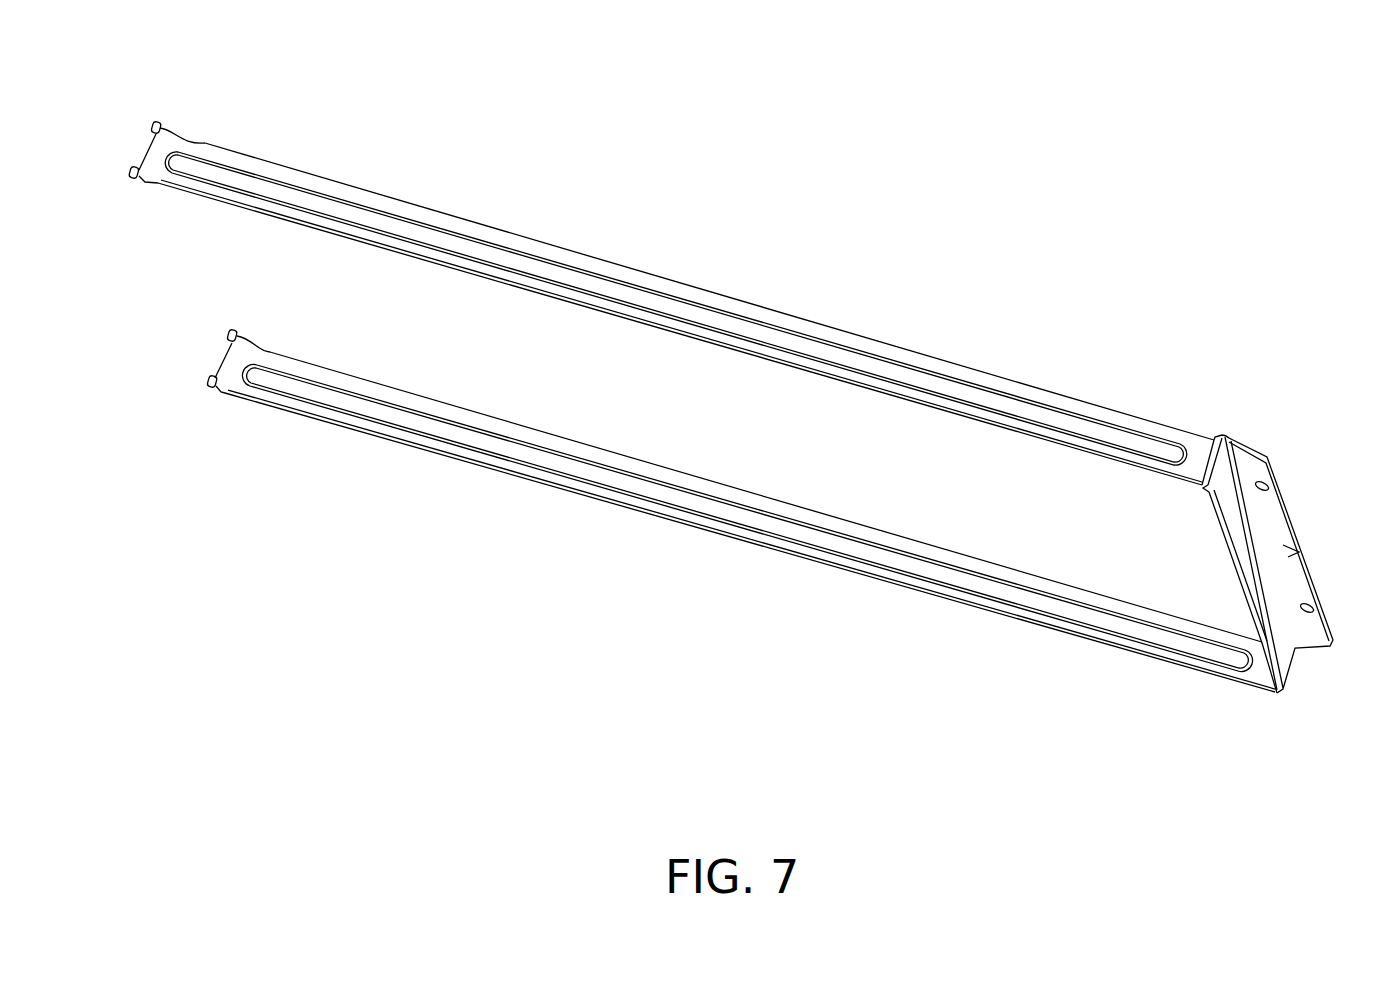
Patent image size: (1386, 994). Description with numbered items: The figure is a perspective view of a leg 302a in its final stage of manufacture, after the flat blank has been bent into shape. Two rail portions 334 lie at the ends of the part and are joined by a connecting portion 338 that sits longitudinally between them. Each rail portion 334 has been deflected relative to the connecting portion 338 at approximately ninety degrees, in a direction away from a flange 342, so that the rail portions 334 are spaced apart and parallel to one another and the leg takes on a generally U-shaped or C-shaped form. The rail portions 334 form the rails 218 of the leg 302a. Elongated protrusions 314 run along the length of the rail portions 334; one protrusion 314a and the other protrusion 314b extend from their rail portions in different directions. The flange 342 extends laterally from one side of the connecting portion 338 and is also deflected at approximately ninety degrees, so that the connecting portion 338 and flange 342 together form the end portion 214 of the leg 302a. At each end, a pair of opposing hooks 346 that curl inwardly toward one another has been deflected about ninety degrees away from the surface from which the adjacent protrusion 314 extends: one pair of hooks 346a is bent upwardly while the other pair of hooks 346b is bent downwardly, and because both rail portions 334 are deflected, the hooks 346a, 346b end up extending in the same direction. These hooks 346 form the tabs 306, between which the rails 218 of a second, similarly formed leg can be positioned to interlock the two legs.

The leg 302a is at (1130, 178).
The rail portion 334 is at (707, 410).
The rail 218 is at (707, 410).
The elongated protrusion 314 is at (708, 412).
The protrusion 314a is at (672, 310).
The protrusion 314b is at (653, 490).
The connecting portion 338 is at (1213, 564).
The end portion 214 is at (1213, 564).
The flange 342 is at (1296, 546).
The hooks 346 is at (146, 291).
The pair of hooks 346a is at (133, 172).
The pair of hooks 346b is at (208, 383).
The tab 306 is at (146, 291).